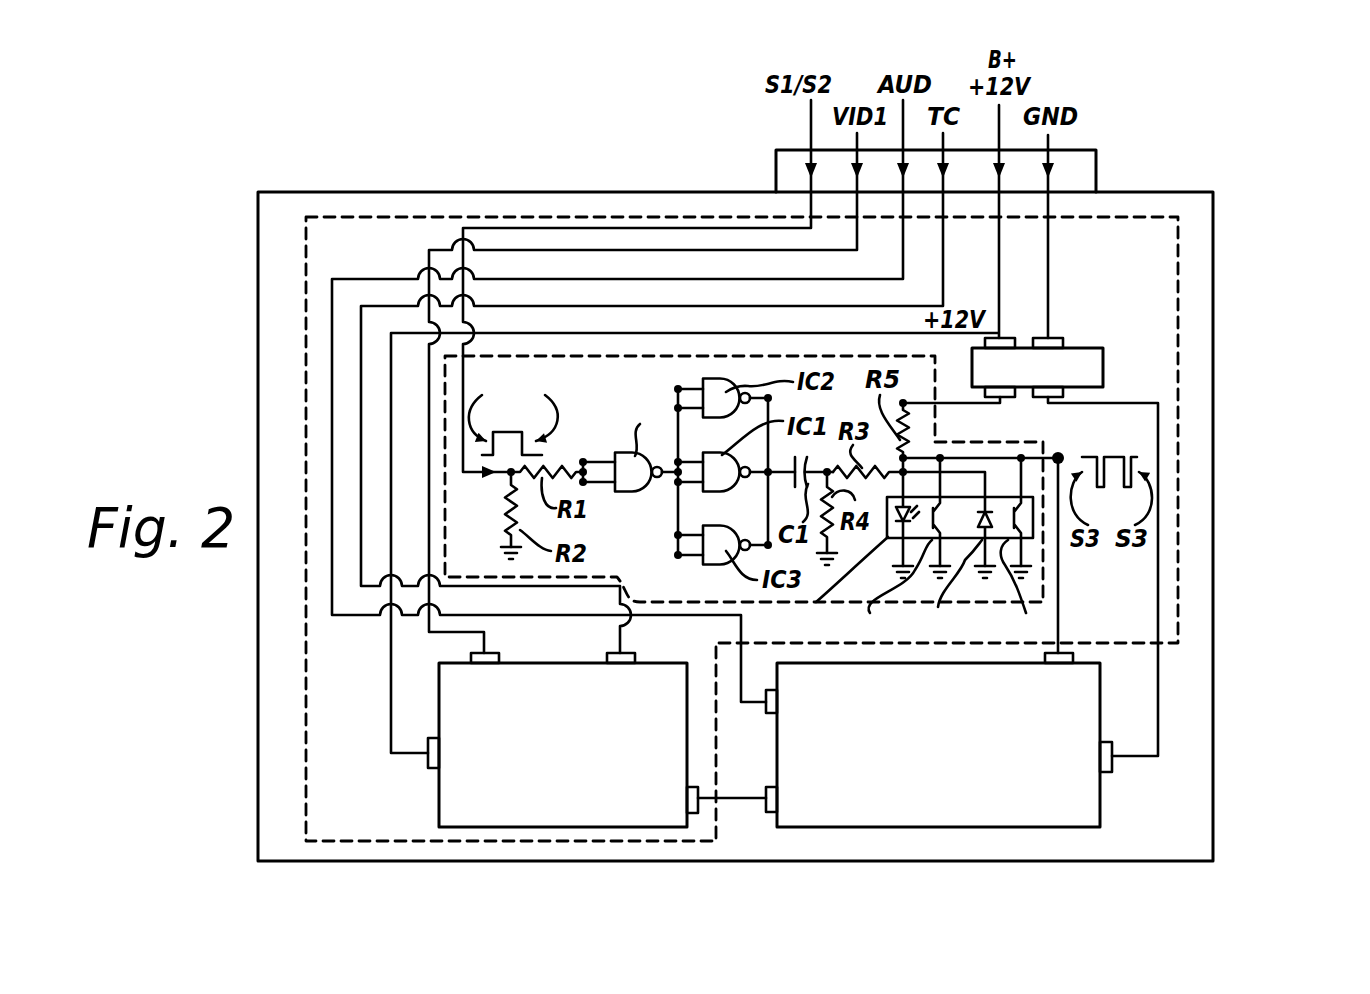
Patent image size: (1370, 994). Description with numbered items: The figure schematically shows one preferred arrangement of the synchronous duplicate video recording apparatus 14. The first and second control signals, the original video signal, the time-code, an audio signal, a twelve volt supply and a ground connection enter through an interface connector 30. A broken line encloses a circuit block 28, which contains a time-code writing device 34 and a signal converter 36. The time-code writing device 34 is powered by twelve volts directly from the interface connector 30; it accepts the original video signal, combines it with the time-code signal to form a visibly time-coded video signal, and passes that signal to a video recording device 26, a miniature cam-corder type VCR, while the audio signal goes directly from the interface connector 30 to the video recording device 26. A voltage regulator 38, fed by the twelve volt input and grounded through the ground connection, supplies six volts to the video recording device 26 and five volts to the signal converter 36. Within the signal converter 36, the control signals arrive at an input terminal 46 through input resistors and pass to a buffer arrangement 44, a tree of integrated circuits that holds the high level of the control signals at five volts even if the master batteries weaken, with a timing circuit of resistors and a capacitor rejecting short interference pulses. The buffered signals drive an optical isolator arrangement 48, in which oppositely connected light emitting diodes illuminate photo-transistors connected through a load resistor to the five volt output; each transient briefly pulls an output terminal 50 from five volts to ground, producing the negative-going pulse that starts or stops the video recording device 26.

The synchronous duplicate video recording apparatus 14 is at (1292, 439).
The video recording device 26 is at (929, 836).
The circuit block 28 is at (419, 848).
The interface connector 30 is at (1102, 166).
The time-code writing device 34 is at (593, 836).
The signal converter 36 is at (604, 362).
The voltage regulator 38 is at (1081, 335).
The buffer arrangement 44 is at (659, 502).
The input terminal 46 is at (501, 479).
The optical isolator arrangement 48 is at (1040, 527).
The output terminal 50 is at (1066, 451).